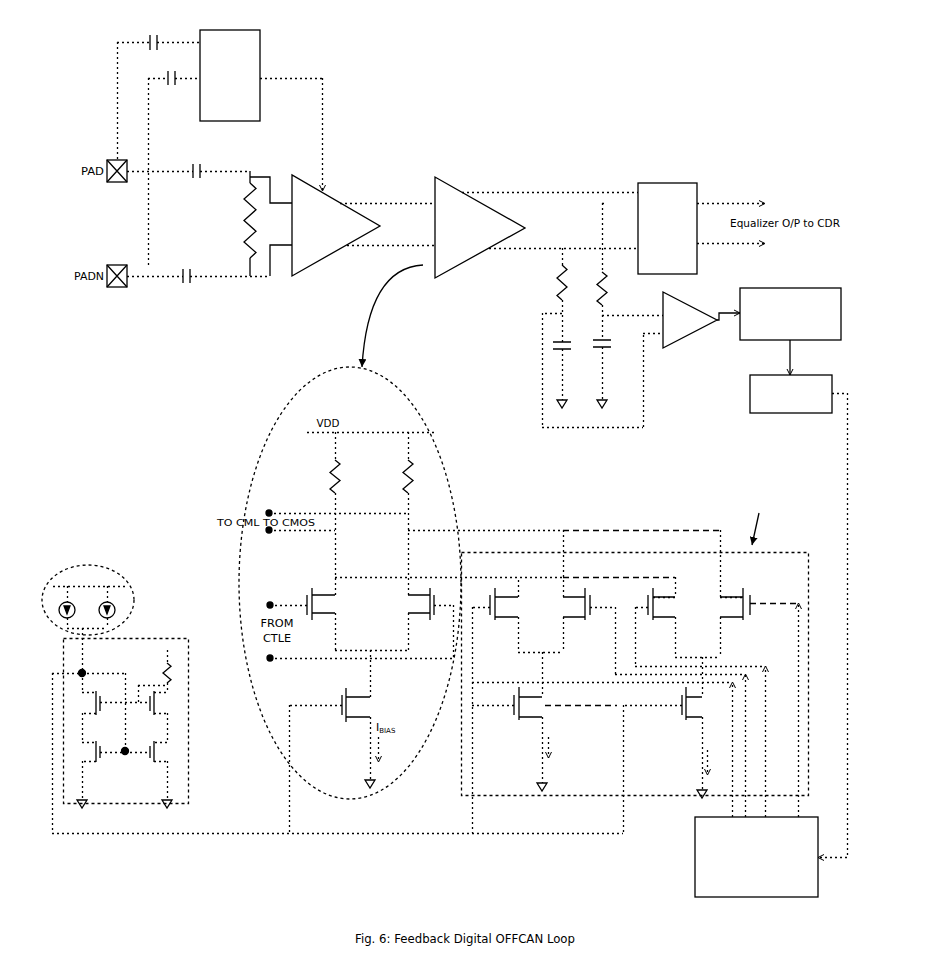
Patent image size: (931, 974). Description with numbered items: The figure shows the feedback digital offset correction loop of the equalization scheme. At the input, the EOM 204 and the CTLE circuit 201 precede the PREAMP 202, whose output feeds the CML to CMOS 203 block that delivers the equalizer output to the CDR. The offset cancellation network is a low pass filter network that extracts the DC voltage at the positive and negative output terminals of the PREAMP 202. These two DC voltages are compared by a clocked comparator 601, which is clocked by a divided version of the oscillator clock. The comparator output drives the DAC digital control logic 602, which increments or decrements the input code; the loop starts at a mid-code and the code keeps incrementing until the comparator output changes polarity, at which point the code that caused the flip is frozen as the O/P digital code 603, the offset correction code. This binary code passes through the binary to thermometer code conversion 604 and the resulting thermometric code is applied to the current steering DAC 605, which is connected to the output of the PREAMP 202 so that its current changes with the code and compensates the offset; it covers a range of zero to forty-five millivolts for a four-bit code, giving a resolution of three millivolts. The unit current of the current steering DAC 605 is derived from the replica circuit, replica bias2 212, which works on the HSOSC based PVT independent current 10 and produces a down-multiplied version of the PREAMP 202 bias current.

The EOM 204 is at (220, 139).
The CTLE circuit 201 is at (363, 225).
The PREAMP 202 is at (536, 227).
The CML to CMOS 203 is at (701, 220).
The clocked comparator 601 is at (704, 327).
The DAC digital control logic 602 is at (790, 324).
The O/P digital code 603 is at (799, 609).
The binary to thermometer code conversion 604 is at (756, 757).
The current steering DAC 605 is at (635, 658).
The HSOSC based PVT independent current 10 is at (128, 588).
The replica bias2 212 is at (130, 735).